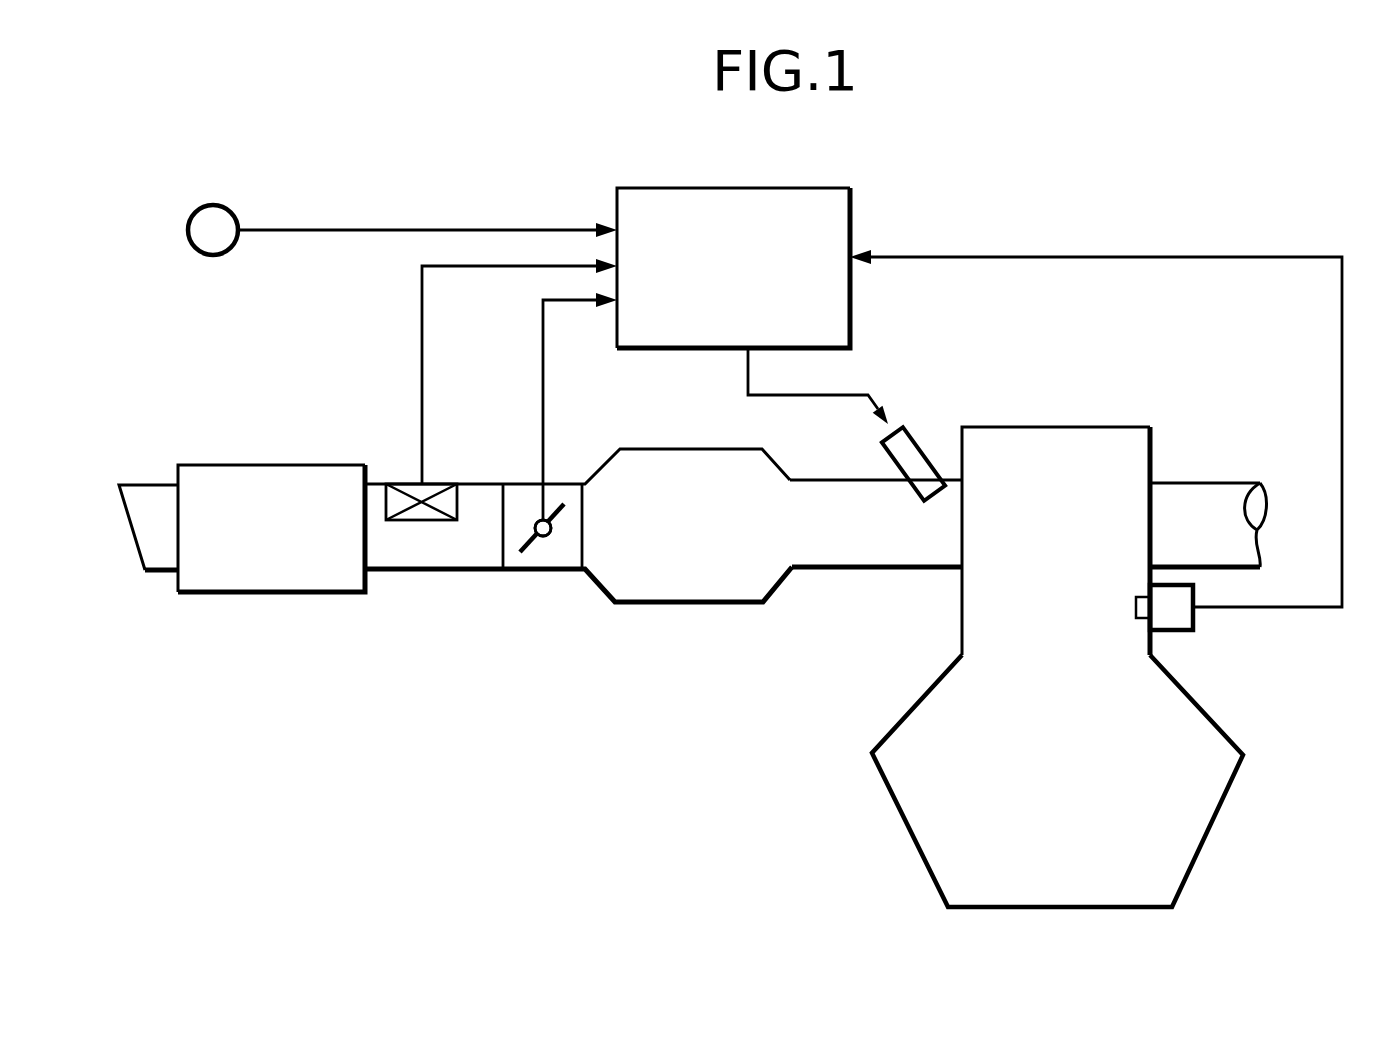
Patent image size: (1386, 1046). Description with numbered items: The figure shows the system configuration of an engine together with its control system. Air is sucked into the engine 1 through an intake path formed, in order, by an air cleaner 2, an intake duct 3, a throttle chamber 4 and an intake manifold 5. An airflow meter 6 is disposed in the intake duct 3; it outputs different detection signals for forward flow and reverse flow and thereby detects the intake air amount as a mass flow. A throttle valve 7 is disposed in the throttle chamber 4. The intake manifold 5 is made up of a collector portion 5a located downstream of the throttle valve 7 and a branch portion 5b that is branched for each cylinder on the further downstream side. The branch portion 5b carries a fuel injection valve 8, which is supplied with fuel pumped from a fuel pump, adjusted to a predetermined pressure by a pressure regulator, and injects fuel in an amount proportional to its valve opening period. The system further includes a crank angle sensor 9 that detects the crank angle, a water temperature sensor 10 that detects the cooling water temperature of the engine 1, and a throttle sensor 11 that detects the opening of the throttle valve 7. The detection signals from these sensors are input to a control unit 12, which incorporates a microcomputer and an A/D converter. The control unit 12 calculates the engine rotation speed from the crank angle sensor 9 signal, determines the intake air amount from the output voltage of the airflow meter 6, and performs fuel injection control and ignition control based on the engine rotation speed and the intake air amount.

The engine 1 is at (1232, 742).
The air cleaner 2 is at (258, 464).
The intake duct 3 is at (425, 571).
The throttle chamber 4 is at (503, 545).
The intake manifold 5 is at (772, 562).
The collector portion 5a is at (698, 602).
The branch portion 5b is at (862, 570).
The airflow meter 6 is at (408, 483).
The throttle valve 7 is at (527, 553).
The fuel injection valve 8 is at (910, 428).
The crank angle sensor 9 is at (198, 212).
The water temperature sensor 10 is at (1195, 621).
The throttle sensor 11 is at (538, 521).
The control unit 12 is at (852, 203).